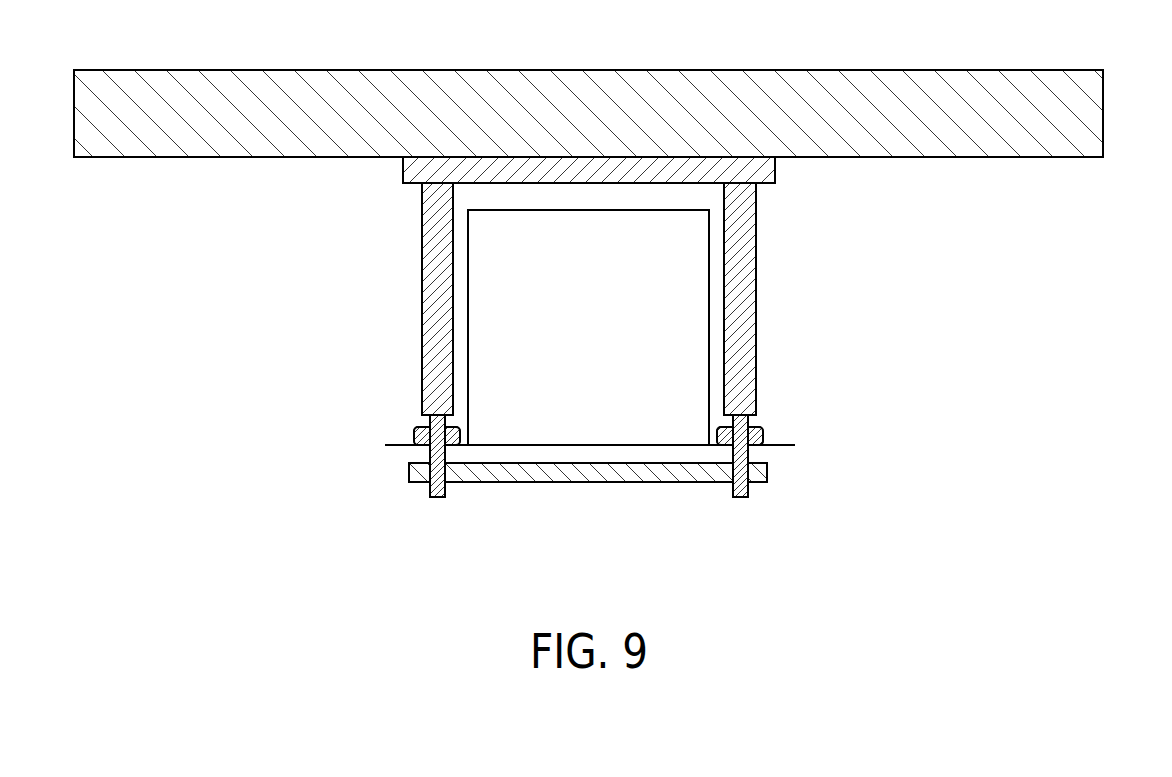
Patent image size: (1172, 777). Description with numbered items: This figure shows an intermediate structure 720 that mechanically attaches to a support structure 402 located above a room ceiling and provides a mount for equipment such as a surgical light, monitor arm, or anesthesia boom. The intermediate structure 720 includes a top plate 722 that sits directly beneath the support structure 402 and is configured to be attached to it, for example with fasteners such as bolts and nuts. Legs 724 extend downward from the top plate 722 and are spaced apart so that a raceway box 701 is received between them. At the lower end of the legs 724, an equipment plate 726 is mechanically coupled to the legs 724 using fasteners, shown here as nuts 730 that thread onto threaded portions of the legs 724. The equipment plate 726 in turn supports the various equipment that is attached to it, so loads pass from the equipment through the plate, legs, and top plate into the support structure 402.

The support structure 402 is at (1103, 111).
The intermediate structure 720 is at (886, 321).
The top plate 722 is at (403, 176).
The legs 724 is at (422, 294).
The raceway box 701 is at (586, 210).
The equipment plate 726 is at (621, 483).
The nuts 730 is at (414, 436).